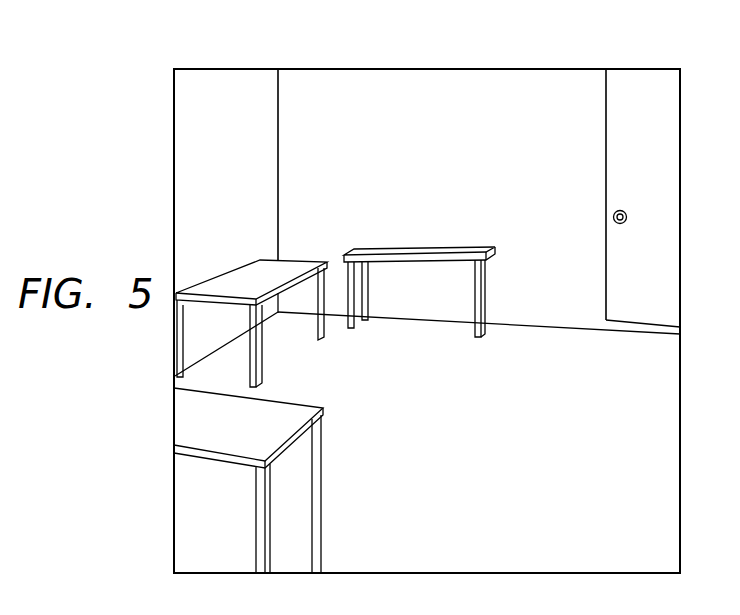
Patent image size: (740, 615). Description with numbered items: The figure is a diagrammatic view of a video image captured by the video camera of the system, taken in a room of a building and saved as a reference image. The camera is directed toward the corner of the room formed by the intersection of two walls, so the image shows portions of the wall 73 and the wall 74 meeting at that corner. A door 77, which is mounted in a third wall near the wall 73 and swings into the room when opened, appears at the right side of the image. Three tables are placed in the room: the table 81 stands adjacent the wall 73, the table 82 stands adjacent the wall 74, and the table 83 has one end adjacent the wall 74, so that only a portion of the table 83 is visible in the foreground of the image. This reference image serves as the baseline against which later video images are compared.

The wall 73 is at (493, 78).
The wall 74 is at (200, 86).
The door 77 is at (618, 143).
The table 81 is at (467, 248).
The table 82 is at (232, 278).
The table 83 is at (287, 413).